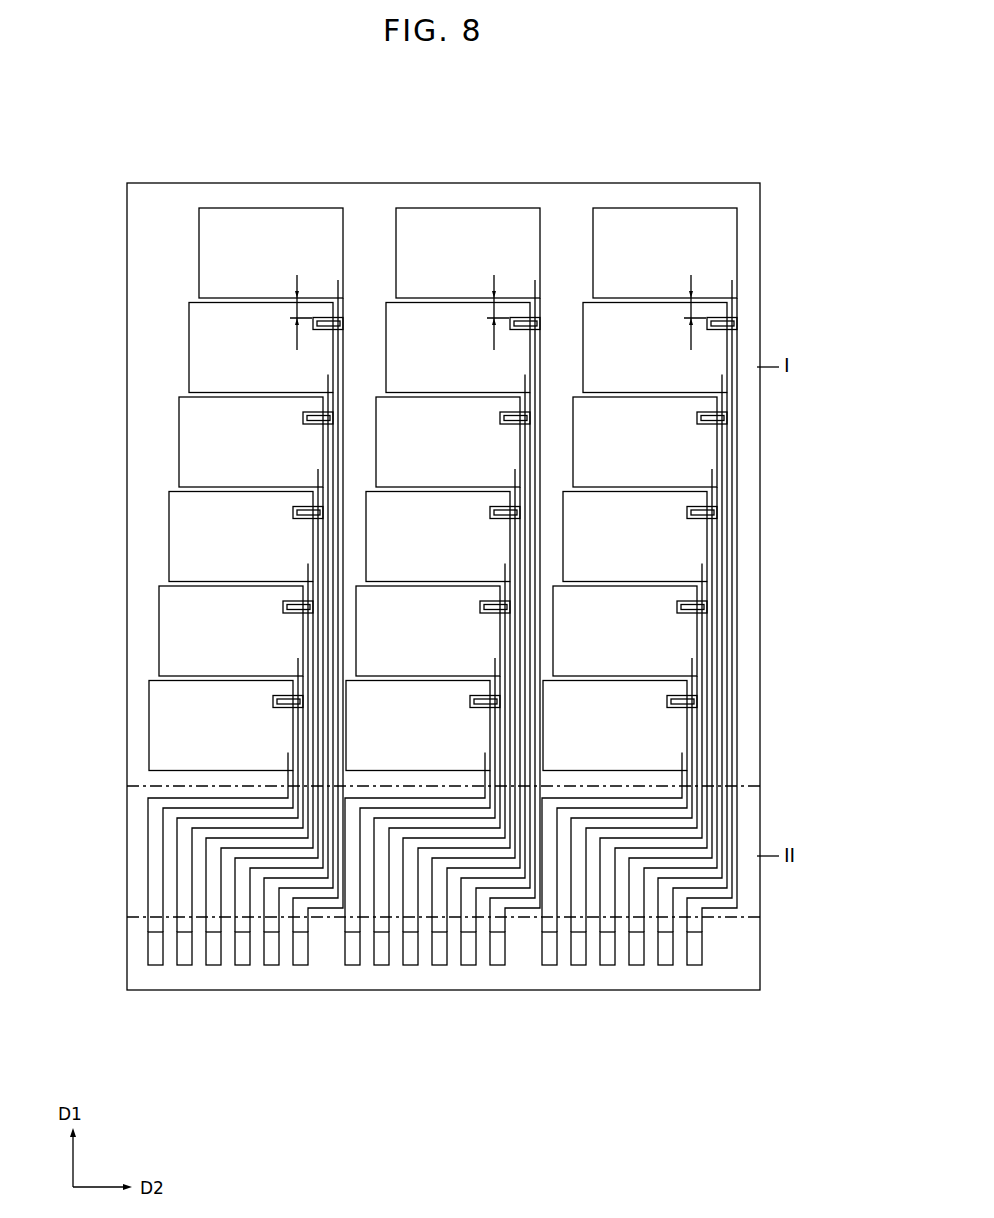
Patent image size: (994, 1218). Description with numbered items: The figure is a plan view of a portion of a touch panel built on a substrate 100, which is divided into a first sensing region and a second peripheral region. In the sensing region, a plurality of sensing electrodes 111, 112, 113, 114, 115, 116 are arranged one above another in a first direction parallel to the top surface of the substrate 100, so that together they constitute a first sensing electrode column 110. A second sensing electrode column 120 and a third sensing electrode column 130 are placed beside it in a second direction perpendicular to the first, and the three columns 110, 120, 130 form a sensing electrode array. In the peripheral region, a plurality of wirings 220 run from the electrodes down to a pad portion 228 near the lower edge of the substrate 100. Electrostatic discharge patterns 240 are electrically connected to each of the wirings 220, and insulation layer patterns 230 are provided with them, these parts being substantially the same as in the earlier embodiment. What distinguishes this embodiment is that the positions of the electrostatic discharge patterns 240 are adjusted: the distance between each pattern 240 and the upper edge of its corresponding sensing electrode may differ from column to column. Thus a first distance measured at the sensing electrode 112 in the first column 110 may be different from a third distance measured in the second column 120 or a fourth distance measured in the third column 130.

The substrate 100 is at (747, 166).
The first sensing electrode column 110 is at (79, 736).
The sensing electrode 111 is at (208, 250).
The sensing electrode 112 is at (200, 345).
The sensing electrode 113 is at (190, 440).
The sensing electrode 114 is at (180, 535).
The sensing electrode 115 is at (170, 629).
The sensing electrode 116 is at (160, 724).
The second sensing electrode column 120 is at (467, 203).
The third sensing electrode column 130 is at (678, 452).
The wirings 220 is at (352, 410).
The pad portion 228 is at (155, 957).
The insulation layer patterns 230 is at (722, 438).
The electrostatic discharge pattern 240 is at (724, 425).